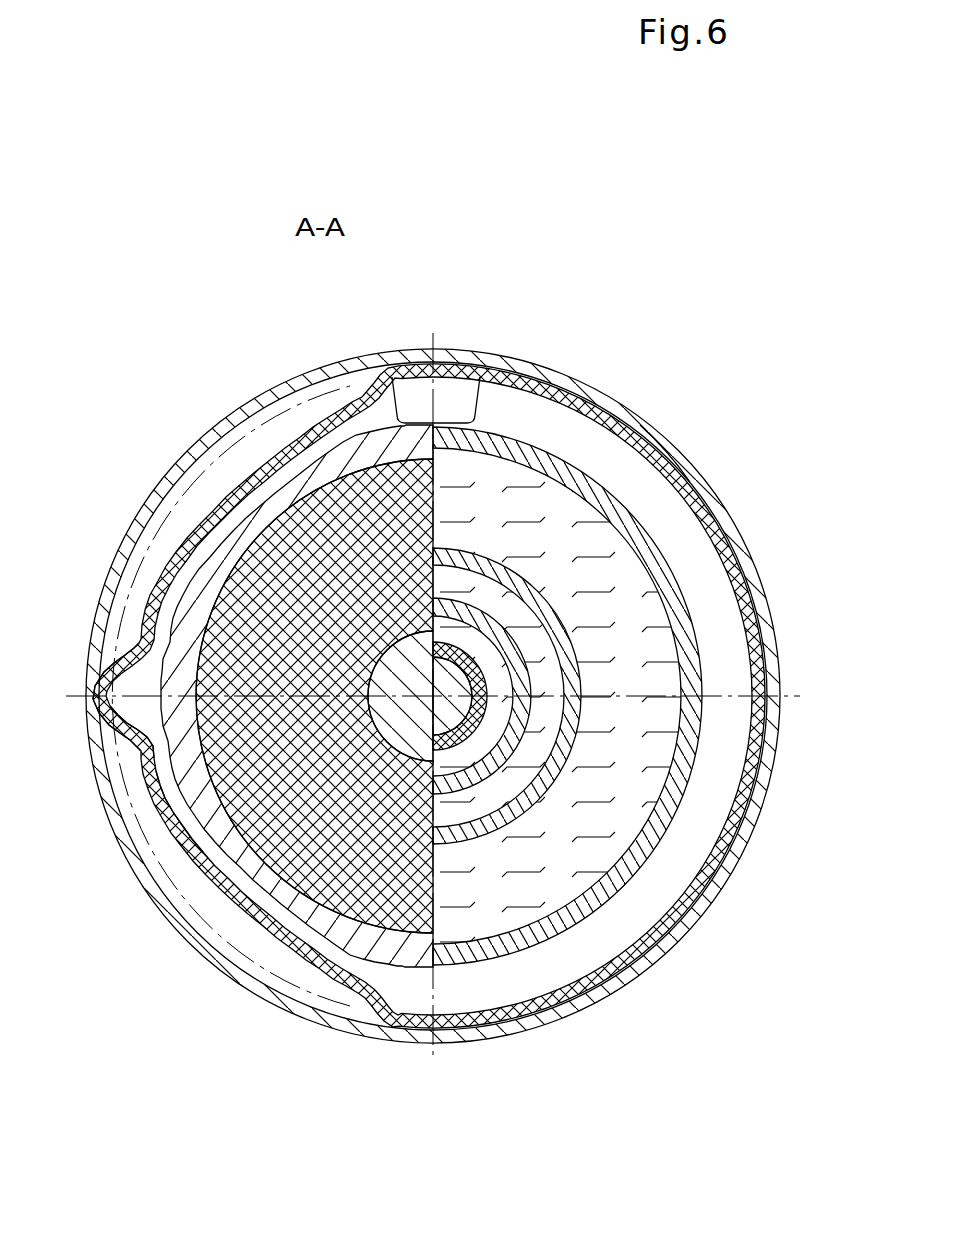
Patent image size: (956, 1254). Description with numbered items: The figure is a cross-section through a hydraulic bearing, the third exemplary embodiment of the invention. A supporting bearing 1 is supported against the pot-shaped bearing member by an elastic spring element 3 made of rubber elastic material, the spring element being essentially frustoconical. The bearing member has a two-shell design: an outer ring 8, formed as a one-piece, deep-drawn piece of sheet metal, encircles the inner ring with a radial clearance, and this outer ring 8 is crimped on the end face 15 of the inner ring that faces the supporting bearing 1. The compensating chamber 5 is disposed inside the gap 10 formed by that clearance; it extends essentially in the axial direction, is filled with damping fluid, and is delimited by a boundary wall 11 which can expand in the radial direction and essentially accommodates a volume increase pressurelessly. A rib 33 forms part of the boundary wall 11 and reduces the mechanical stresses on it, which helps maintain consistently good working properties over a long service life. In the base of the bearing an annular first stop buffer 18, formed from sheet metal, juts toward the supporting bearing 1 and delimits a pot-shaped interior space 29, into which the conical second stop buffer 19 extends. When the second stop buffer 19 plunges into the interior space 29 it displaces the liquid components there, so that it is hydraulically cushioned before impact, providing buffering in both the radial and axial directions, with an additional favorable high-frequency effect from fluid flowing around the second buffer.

The supporting bearing 1 is at (260, 935).
The elastic spring element 3 is at (235, 603).
The compensating chamber 5 is at (180, 847).
The outer ring 8 is at (665, 448).
The gap 10 is at (192, 503).
The boundary wall 11 is at (150, 780).
The end face 15 is at (642, 541).
The first stop buffer 18 is at (430, 686).
The second stop buffer 19 is at (470, 780).
The interior space 29 is at (490, 662).
The rib 33 is at (88, 652).